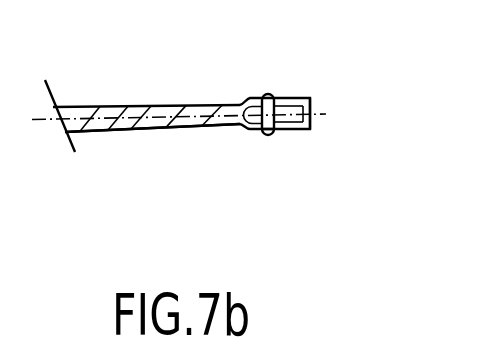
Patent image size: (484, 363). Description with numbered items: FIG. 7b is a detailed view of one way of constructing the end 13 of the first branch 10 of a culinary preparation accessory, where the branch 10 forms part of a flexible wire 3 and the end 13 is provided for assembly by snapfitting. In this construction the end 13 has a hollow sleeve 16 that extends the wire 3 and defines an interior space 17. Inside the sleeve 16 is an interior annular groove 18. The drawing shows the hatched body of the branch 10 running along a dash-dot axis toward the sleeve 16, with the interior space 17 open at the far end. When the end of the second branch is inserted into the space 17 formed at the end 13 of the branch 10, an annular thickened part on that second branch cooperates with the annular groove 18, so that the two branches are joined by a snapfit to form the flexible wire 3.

The first branch 10 is at (147, 105).
The flexible wire 3 is at (118, 129).
The end of the first branch 13 is at (313, 97).
The hollow sleeve 16 is at (253, 97).
The interior annular groove 18 is at (266, 135).
The interior space 17 is at (313, 123).